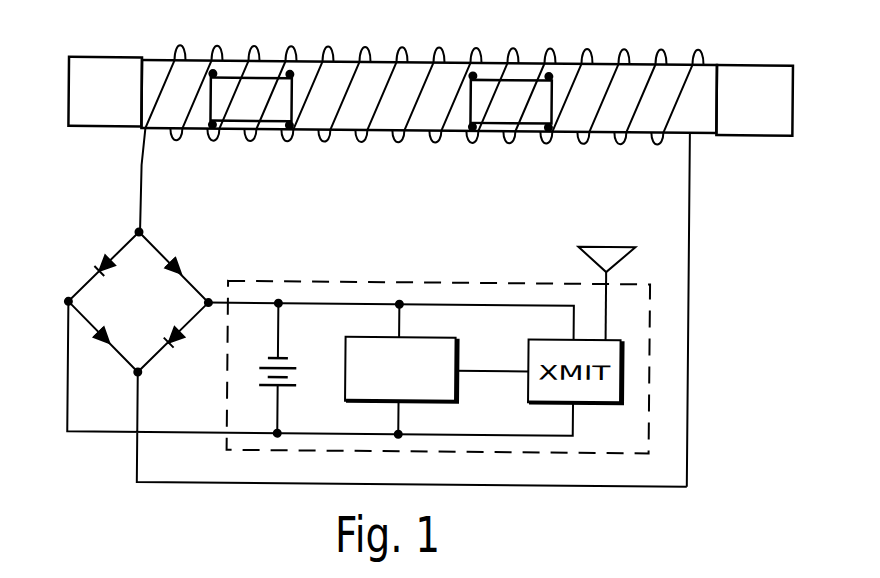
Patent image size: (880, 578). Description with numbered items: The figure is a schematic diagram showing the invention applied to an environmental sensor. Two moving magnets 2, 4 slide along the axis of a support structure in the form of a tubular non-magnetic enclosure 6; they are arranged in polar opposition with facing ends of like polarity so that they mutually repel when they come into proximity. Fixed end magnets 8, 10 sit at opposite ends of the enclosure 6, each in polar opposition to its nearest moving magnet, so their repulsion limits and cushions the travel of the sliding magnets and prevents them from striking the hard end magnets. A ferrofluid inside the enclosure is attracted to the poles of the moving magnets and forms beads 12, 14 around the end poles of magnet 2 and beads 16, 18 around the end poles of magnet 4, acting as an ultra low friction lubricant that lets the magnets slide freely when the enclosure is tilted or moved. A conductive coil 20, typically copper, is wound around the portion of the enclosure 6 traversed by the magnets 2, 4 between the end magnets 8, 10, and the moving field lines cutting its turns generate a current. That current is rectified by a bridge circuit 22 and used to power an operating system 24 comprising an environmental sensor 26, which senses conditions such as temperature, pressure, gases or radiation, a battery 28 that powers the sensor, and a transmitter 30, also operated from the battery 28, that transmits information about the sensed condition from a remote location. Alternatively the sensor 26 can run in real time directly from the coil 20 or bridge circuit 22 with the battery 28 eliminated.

The moving magnet 2 is at (262, 77).
The moving magnet 4 is at (527, 75).
The tubular non-magnetic enclosure 6 is at (636, 57).
The fixed end magnet 8 is at (107, 63).
The fixed end magnet 10 is at (753, 61).
The ferrofluid bead 12 is at (210, 72).
The ferrofluid bead 14 is at (290, 73).
The ferrofluid bead 16 is at (473, 73).
The ferrofluid bead 18 is at (549, 74).
The conductive coil 20 is at (362, 48).
The bridge circuit 22 is at (156, 310).
The operating system 24 is at (364, 281).
The environmental sensor 26 is at (460, 343).
The battery 28 is at (265, 361).
The transmitter 30 is at (614, 242).